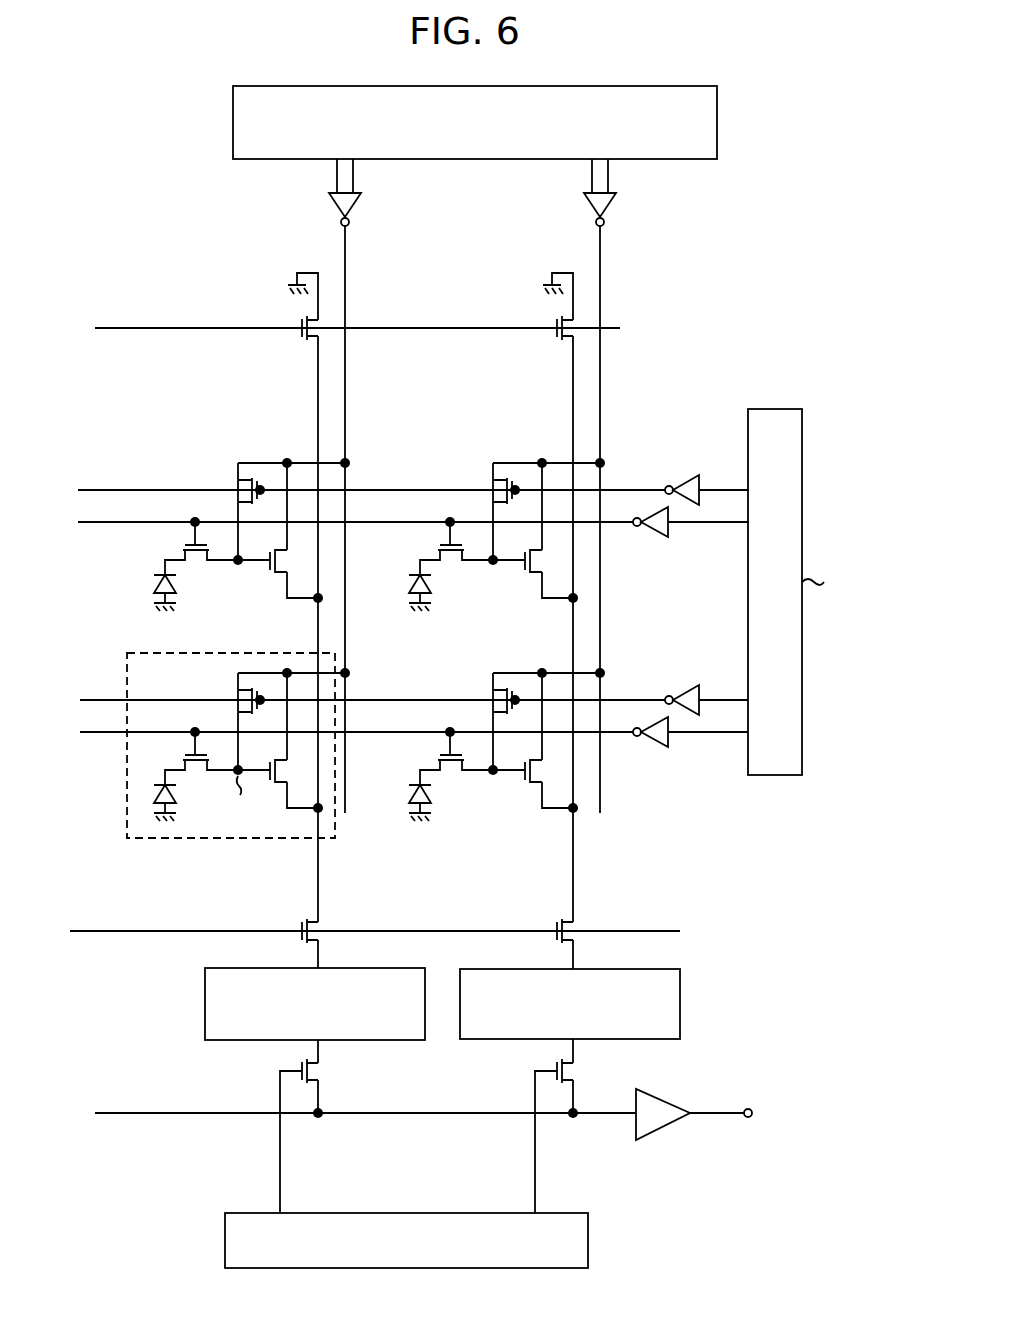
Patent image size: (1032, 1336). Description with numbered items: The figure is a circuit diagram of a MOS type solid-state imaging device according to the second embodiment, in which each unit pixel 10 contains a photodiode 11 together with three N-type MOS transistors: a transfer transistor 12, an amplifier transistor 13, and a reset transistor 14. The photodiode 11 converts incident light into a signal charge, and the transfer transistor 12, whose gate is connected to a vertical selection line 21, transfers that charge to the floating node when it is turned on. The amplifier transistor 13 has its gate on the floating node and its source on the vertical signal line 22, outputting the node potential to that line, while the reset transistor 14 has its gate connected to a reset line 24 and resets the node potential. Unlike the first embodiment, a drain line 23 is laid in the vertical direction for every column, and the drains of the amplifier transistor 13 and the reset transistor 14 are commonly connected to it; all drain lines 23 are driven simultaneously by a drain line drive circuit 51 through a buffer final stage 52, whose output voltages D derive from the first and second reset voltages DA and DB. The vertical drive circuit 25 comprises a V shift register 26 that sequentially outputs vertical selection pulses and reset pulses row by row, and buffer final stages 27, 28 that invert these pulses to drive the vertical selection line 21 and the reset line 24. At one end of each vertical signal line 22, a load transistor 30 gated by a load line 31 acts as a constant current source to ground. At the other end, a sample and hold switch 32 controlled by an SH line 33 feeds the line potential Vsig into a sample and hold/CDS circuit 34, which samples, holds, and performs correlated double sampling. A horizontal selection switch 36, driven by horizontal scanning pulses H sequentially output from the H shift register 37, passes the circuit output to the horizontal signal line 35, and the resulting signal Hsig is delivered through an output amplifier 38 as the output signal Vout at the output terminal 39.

The unit pixel 10 is at (216, 724).
The photodiode 11 is at (152, 793).
The transfer transistor 12 is at (197, 765).
The amplifier transistor 13 is at (278, 790).
The reset transistor 14 is at (244, 696).
The vertical selection line 21 is at (80, 732).
The vertical signal line 22 is at (315, 891).
The drain line 23 is at (346, 406).
The reset line 24 is at (80, 700).
The vertical drive circuit 25 is at (676, 646).
The V shift register 26 is at (778, 409).
The buffer final stage 27 is at (655, 540).
The buffer final stage 28 is at (681, 478).
The load transistor 30 is at (316, 343).
The load line 31 is at (200, 326).
The sample and hold switch 32 is at (320, 927).
The SH line 33 is at (658, 930).
The sample and hold/CDS circuit 34 is at (205, 1003).
The horizontal signal line 35 is at (353, 1117).
The horizontal selection switch 36 is at (320, 1073).
The H shift register 37 is at (588, 1242).
The output amplifier 38 is at (635, 1134).
The output terminal 39 is at (748, 1118).
The drain line drive circuit 51 is at (717, 126).
The buffer final stage 52 is at (352, 207).